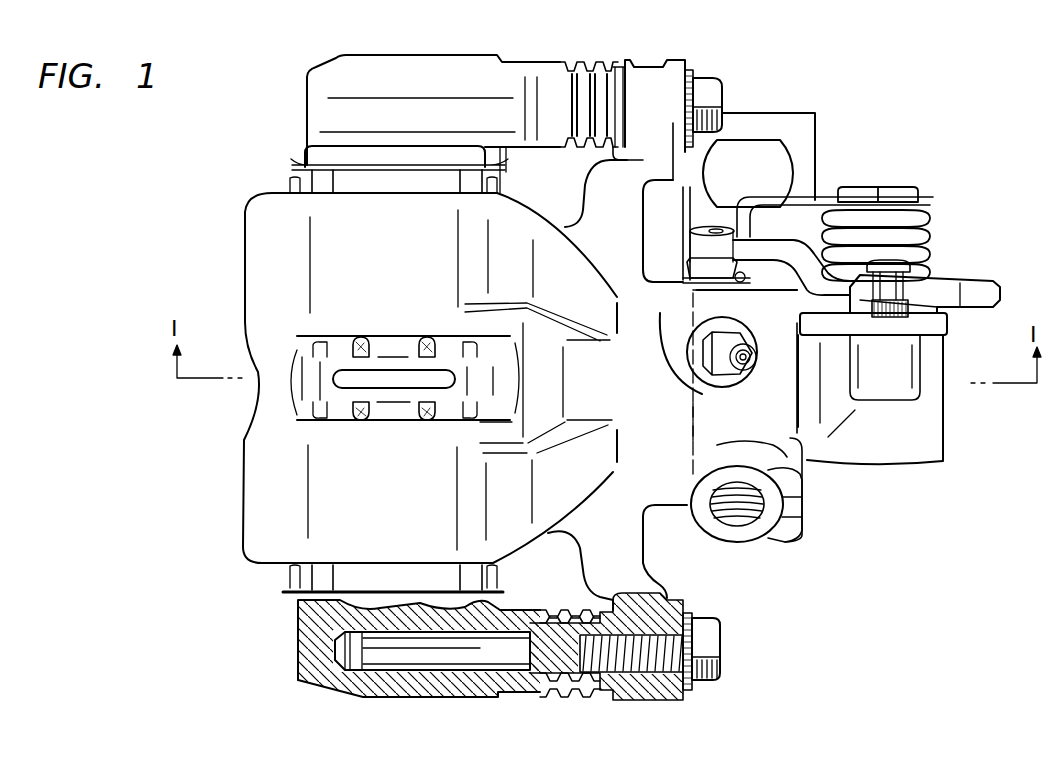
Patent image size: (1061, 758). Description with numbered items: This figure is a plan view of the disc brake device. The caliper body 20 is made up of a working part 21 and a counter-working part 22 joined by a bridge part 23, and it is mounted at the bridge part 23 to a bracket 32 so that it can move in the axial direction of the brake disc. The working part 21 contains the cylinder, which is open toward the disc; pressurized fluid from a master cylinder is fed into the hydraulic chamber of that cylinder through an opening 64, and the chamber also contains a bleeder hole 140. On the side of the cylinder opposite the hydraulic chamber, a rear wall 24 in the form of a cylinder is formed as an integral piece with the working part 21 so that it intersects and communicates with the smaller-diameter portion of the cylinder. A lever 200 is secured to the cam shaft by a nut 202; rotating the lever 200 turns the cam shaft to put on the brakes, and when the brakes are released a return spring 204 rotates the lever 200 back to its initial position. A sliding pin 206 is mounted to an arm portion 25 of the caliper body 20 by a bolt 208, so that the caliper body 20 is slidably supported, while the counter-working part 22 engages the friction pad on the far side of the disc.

The caliper body 20 is at (662, 506).
The working part 21 is at (748, 436).
The counter-working part 22 is at (251, 250).
The bridge part 23 is at (384, 540).
The rear wall 24 is at (938, 414).
The arm portion 25 is at (596, 186).
The bracket 32 is at (450, 64).
The opening 64 is at (738, 517).
The bleeder hole 140 is at (749, 370).
The lever 200 is at (957, 281).
The nut 202 is at (895, 190).
The return spring 204 is at (927, 217).
The sliding pin 206 is at (430, 657).
The bolt 208 is at (721, 84).